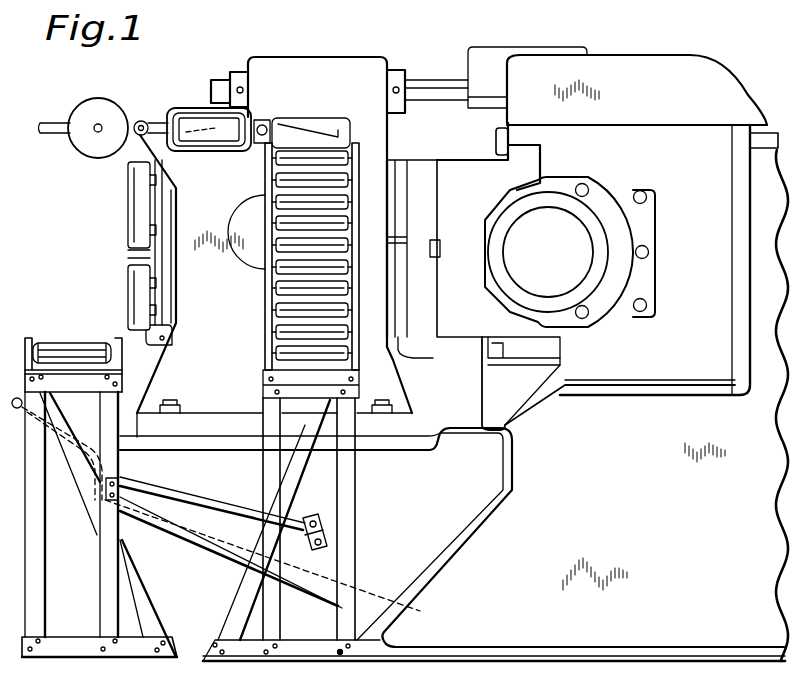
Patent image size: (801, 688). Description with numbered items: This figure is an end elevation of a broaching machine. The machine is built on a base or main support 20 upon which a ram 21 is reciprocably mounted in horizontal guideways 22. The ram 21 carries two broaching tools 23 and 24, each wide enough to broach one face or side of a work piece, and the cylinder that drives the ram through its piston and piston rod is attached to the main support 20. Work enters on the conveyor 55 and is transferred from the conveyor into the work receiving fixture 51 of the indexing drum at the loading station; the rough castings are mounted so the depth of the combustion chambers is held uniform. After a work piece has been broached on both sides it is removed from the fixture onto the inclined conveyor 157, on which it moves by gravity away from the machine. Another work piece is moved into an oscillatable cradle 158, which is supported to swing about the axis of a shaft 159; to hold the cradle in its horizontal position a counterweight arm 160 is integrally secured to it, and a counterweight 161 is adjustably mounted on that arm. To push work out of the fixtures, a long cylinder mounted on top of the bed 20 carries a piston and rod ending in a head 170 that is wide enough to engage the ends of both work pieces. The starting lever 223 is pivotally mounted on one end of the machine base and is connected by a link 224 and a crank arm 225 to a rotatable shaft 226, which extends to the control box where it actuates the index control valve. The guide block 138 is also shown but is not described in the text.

The base or main support 20 is at (497, 640).
The ram 21 is at (480, 158).
The horizontal guideways 22 is at (520, 143).
The broaching tool 23 is at (397, 170).
The broaching tool 24 is at (427, 356).
The work receiving fixture 51 is at (160, 330).
The conveyor 55 is at (74, 330).
The guide block 138 is at (172, 209).
The inclined conveyor 157 is at (275, 200).
The oscillatable cradle 158 is at (203, 100).
The shaft 159 is at (143, 122).
The counterweight arm 160 is at (45, 133).
The counterweight 161 is at (88, 142).
The head 170 is at (320, 135).
The starting lever 223 is at (15, 398).
The link 224 is at (223, 484).
The crank arm 225 is at (322, 530).
The rotatable shaft 226 is at (326, 545).